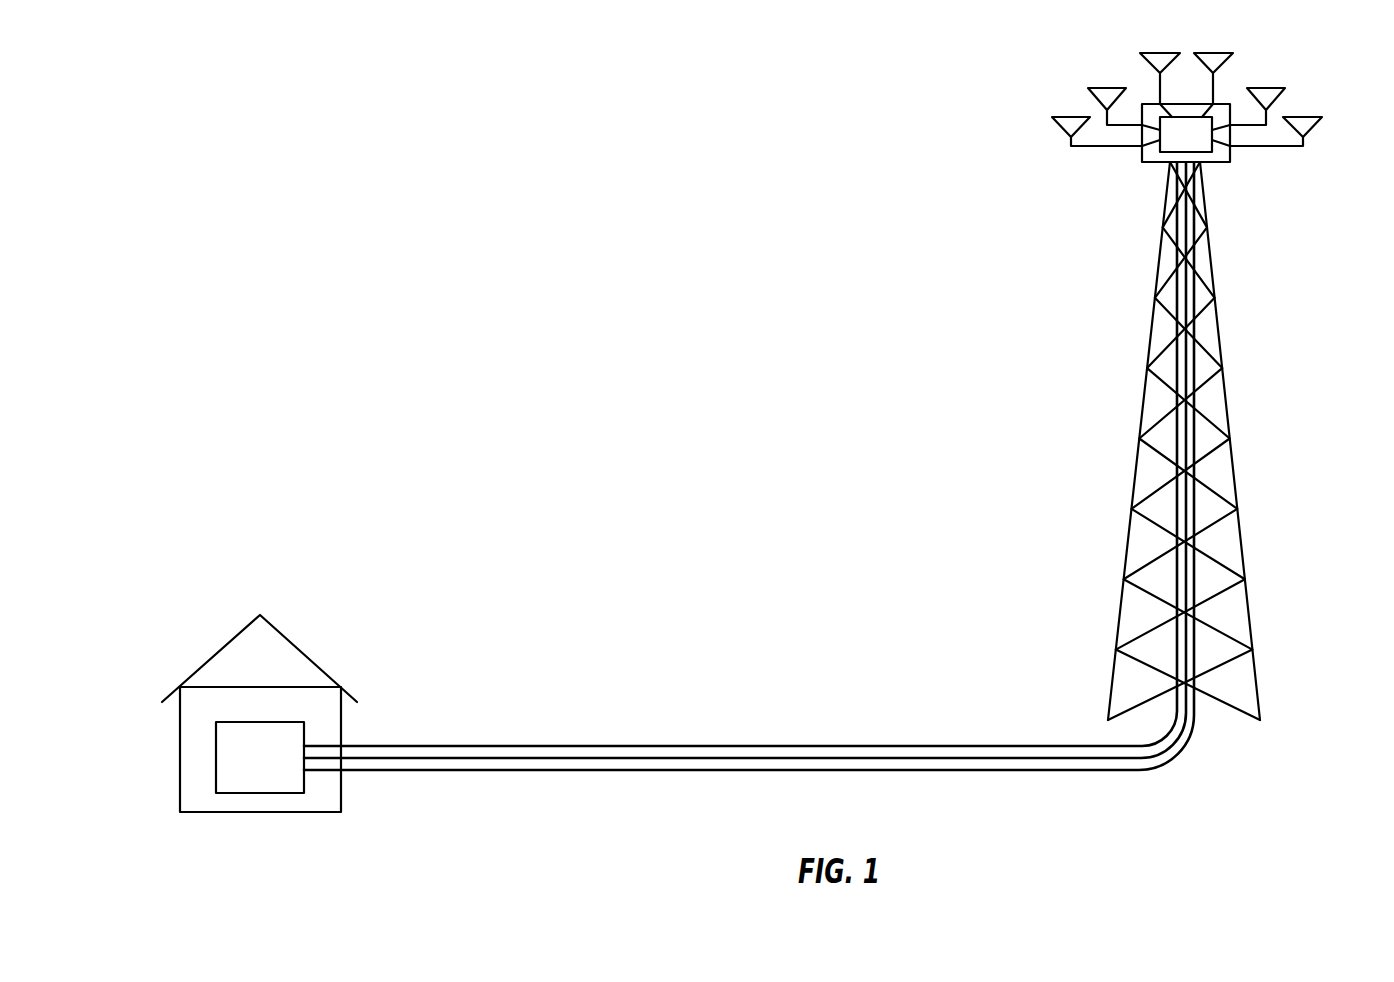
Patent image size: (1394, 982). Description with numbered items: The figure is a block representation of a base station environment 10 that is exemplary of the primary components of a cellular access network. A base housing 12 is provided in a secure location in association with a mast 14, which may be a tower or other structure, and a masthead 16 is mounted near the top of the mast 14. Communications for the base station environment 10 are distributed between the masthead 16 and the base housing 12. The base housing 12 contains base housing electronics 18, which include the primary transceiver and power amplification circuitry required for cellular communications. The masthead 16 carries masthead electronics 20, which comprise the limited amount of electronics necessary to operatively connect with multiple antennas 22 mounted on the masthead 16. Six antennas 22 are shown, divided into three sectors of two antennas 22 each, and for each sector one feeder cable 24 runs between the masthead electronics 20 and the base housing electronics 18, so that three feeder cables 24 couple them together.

The base station environment 10 is at (646, 226).
The base housing 12 is at (288, 636).
The mast 14 is at (1222, 362).
The masthead 16 is at (1205, 151).
The base housing electronics 18 is at (250, 772).
The masthead electronics 20 is at (1174, 144).
The antennas 22 is at (1147, 52).
The feeder cables 24 is at (943, 746).